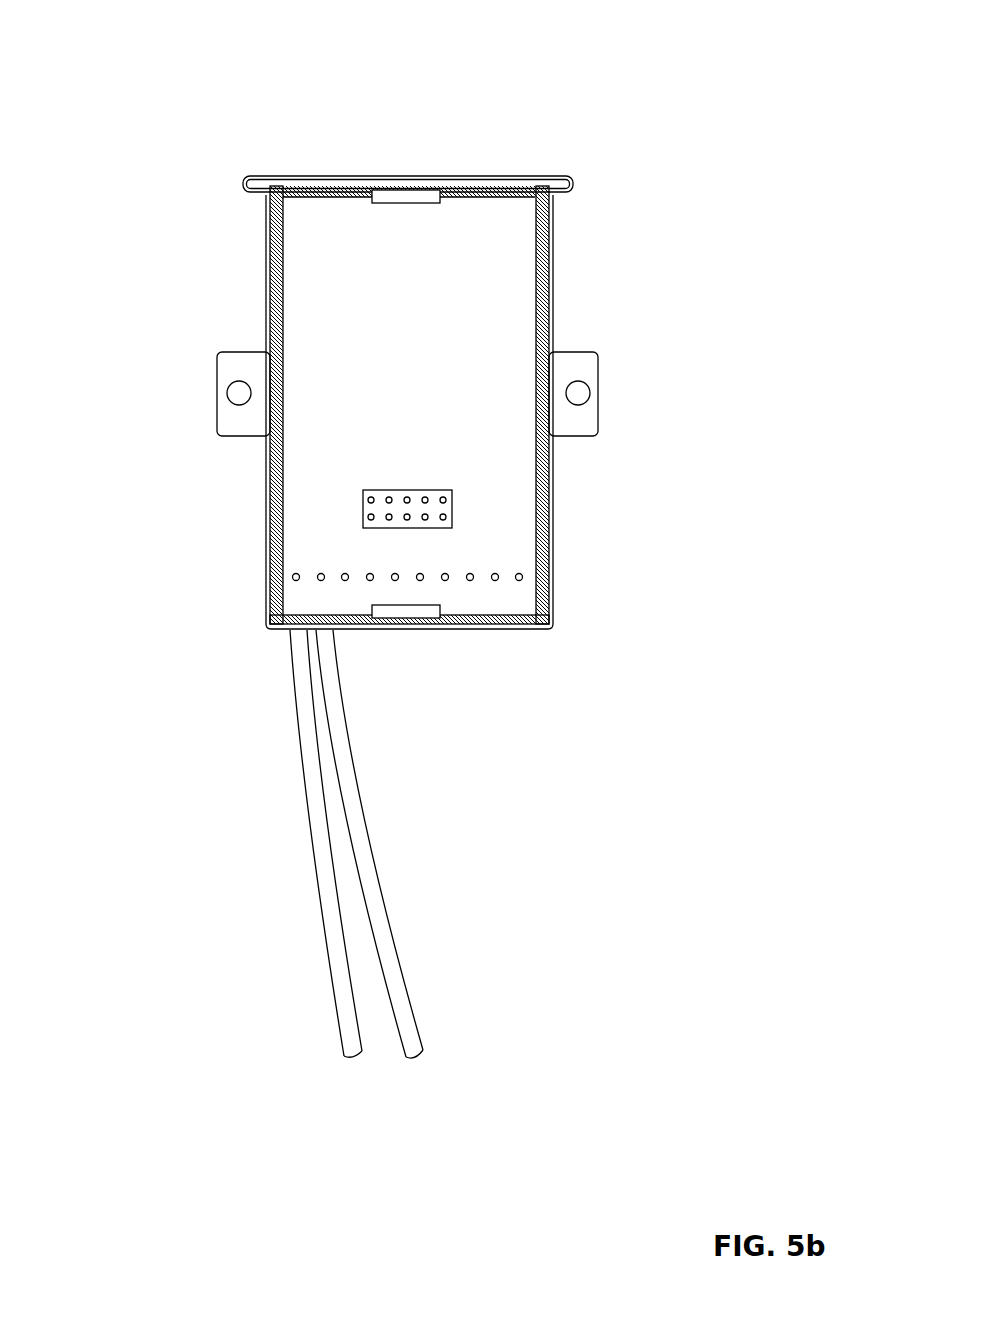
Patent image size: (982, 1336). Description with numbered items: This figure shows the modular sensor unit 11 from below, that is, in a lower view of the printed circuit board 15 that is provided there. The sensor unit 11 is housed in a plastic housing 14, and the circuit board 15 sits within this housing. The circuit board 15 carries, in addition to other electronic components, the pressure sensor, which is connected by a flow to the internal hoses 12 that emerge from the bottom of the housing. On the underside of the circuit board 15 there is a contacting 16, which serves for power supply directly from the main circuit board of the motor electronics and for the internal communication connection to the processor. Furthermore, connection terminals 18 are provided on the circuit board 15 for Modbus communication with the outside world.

The sensor unit 11 is at (519, 139).
The hose 12 is at (302, 806).
The plastic housing 14 is at (548, 307).
The printed circuit board 15 is at (326, 288).
The contacts 16 is at (445, 508).
The connection terminals 18 is at (495, 578).